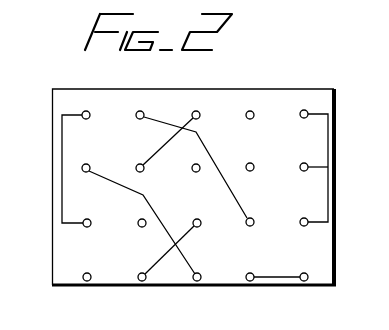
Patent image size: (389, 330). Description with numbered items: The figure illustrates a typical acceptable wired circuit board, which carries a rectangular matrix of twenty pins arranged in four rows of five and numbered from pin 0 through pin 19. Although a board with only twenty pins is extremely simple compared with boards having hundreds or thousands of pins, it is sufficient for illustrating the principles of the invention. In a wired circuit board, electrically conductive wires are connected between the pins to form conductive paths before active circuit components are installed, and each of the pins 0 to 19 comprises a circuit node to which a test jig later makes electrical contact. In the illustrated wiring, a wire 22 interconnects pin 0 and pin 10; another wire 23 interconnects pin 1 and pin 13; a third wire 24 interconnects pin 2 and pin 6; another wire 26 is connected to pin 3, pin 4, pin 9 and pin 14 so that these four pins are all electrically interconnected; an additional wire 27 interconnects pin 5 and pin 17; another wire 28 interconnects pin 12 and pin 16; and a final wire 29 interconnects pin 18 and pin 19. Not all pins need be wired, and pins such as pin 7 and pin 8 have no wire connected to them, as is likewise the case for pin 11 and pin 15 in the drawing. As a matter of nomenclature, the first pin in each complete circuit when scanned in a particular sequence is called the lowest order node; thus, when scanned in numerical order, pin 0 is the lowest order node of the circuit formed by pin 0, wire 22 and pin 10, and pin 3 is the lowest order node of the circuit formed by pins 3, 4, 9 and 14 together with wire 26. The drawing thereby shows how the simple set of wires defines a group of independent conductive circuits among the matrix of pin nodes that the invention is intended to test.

The pin 0 is at (87, 106).
The pin 1 is at (140, 106).
The pin 2 is at (197, 106).
The pin 3 is at (250, 106).
The pin 4 is at (304, 105).
The pin 5 is at (85, 160).
The pin 6 is at (139, 160).
The pin 7 is at (195, 160).
The pin 8 is at (250, 159).
The pin 9 is at (304, 159).
The pin 10 is at (87, 214).
The pin 11 is at (140, 214).
The pin 12 is at (198, 214).
The pin 13 is at (255, 213).
The pin 14 is at (305, 213).
The pin 15 is at (88, 268).
The pin 16 is at (142, 268).
The pin 17 is at (203, 268).
The pin 18 is at (250, 268).
The pin 19 is at (302, 268).
The wire 22 is at (52, 151).
The wire 23 is at (157, 117).
The wire 24 is at (185, 124).
The wire 26 is at (336, 118).
The wire 27 is at (190, 263).
The wire 28 is at (163, 260).
The wire 29 is at (277, 277).